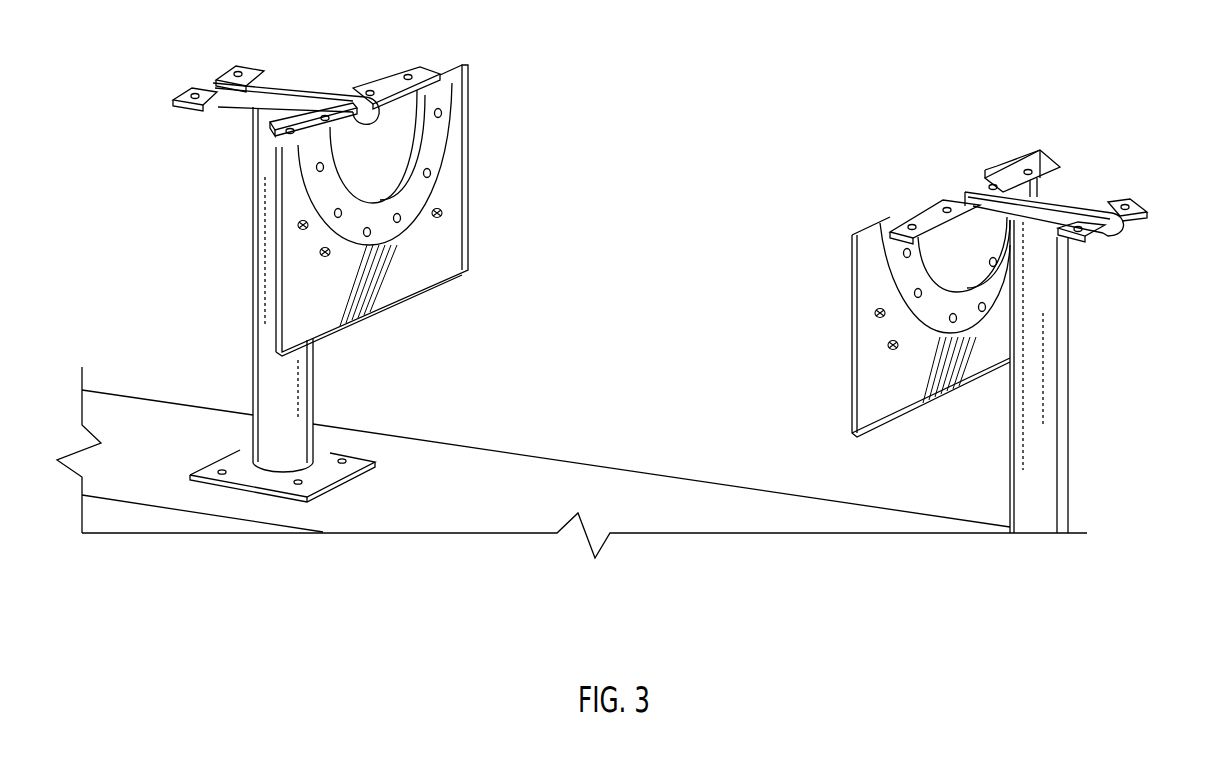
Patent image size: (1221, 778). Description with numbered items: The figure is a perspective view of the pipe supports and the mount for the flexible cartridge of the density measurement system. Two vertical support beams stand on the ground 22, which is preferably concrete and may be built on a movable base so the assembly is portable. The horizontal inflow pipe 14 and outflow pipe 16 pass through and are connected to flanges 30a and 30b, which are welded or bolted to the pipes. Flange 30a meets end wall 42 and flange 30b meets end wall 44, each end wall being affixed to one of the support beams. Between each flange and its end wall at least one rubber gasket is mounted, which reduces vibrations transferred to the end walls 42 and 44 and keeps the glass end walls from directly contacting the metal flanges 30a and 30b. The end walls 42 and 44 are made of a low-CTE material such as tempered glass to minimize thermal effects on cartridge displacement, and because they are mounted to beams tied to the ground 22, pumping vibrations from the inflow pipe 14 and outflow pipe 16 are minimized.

The inflow pipe 14 is at (218, 116).
The outflow pipe 16 is at (1099, 240).
The ground 22 is at (548, 458).
The flange 30a is at (436, 101).
The flange 30b is at (880, 220).
The end wall 42 is at (398, 248).
The end wall 44 is at (886, 322).